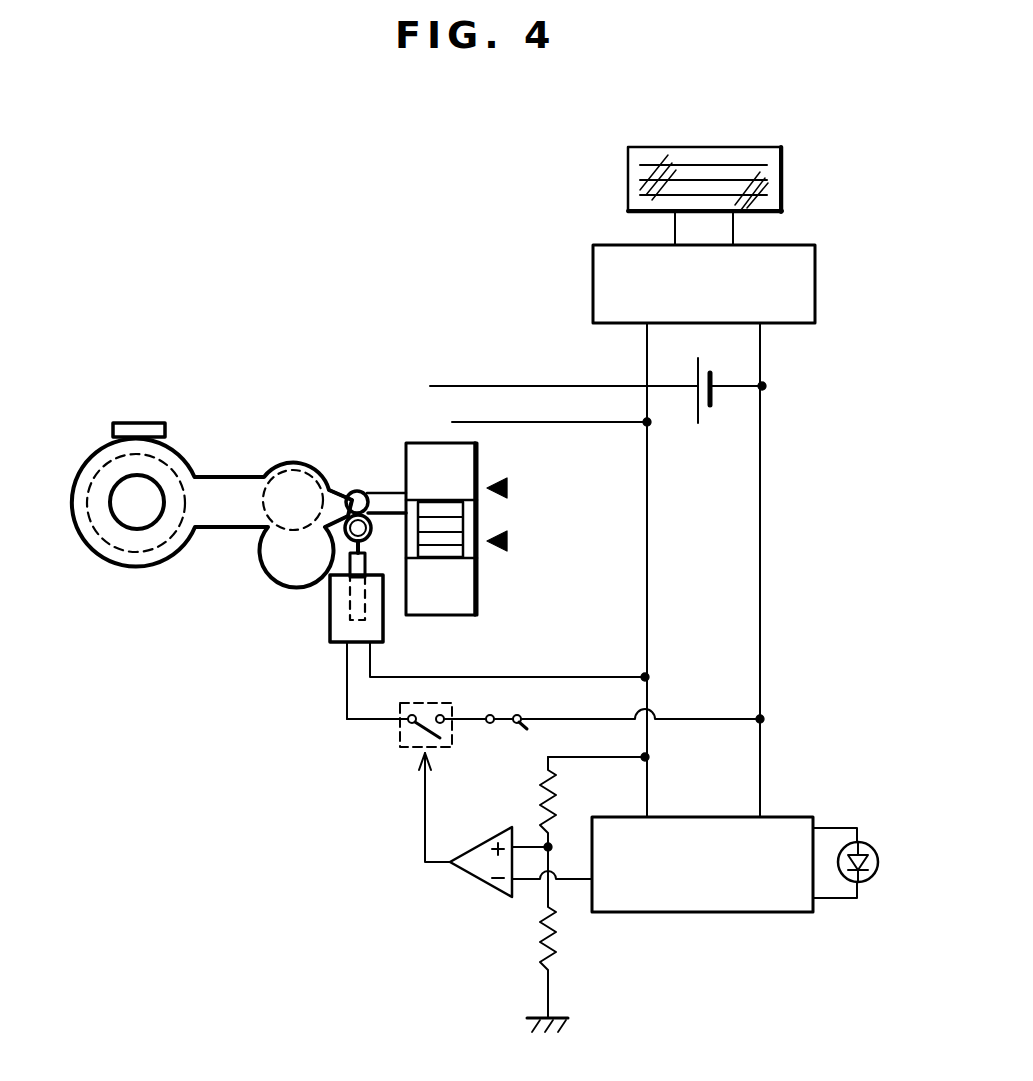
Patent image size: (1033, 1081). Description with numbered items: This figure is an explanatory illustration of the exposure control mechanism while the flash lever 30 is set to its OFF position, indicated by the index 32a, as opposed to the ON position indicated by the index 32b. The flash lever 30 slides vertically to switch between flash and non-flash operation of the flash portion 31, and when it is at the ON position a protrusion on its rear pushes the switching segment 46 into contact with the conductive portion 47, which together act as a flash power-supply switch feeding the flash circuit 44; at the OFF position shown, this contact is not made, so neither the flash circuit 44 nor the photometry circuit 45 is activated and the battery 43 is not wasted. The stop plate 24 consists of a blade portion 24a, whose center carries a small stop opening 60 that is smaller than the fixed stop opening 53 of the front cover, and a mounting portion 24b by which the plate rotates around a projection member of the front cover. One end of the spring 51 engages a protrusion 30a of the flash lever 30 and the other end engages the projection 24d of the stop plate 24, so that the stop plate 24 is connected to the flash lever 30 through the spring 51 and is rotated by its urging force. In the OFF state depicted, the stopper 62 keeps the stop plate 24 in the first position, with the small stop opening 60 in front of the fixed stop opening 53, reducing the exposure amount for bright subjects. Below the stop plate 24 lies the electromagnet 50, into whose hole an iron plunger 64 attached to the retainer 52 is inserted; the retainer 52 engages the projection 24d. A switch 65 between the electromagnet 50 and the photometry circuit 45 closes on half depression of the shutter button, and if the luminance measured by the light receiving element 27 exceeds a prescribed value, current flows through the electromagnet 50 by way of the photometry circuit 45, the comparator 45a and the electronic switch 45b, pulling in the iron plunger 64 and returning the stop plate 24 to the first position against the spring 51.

The stop plate 24 is at (217, 477).
The blade portion 24a is at (145, 564).
The mounting portion 24b is at (297, 463).
The projection 24d is at (340, 550).
The light receiving element 27 is at (867, 883).
The flash lever 30 is at (478, 609).
The protrusion 30a is at (356, 491).
The flash portion 31 is at (633, 160).
The index 32a is at (576, 545).
The index 32b is at (560, 490).
The battery 43 is at (700, 424).
The flash circuit 44 is at (593, 268).
The photometry circuit 45 is at (713, 912).
The comparator 45a is at (482, 873).
The electronic switch 45b is at (402, 748).
The switching segment 46 is at (452, 422).
The conductive portion 47 is at (470, 386).
The electromagnet 50 is at (333, 632).
The spring 51 is at (263, 470).
The retainer 52 is at (347, 540).
The fixed stop opening 53 is at (100, 467).
The small stop opening 60 is at (117, 524).
The stopper 62 is at (140, 424).
The iron plunger 64 is at (363, 607).
The switch 65 is at (510, 728).